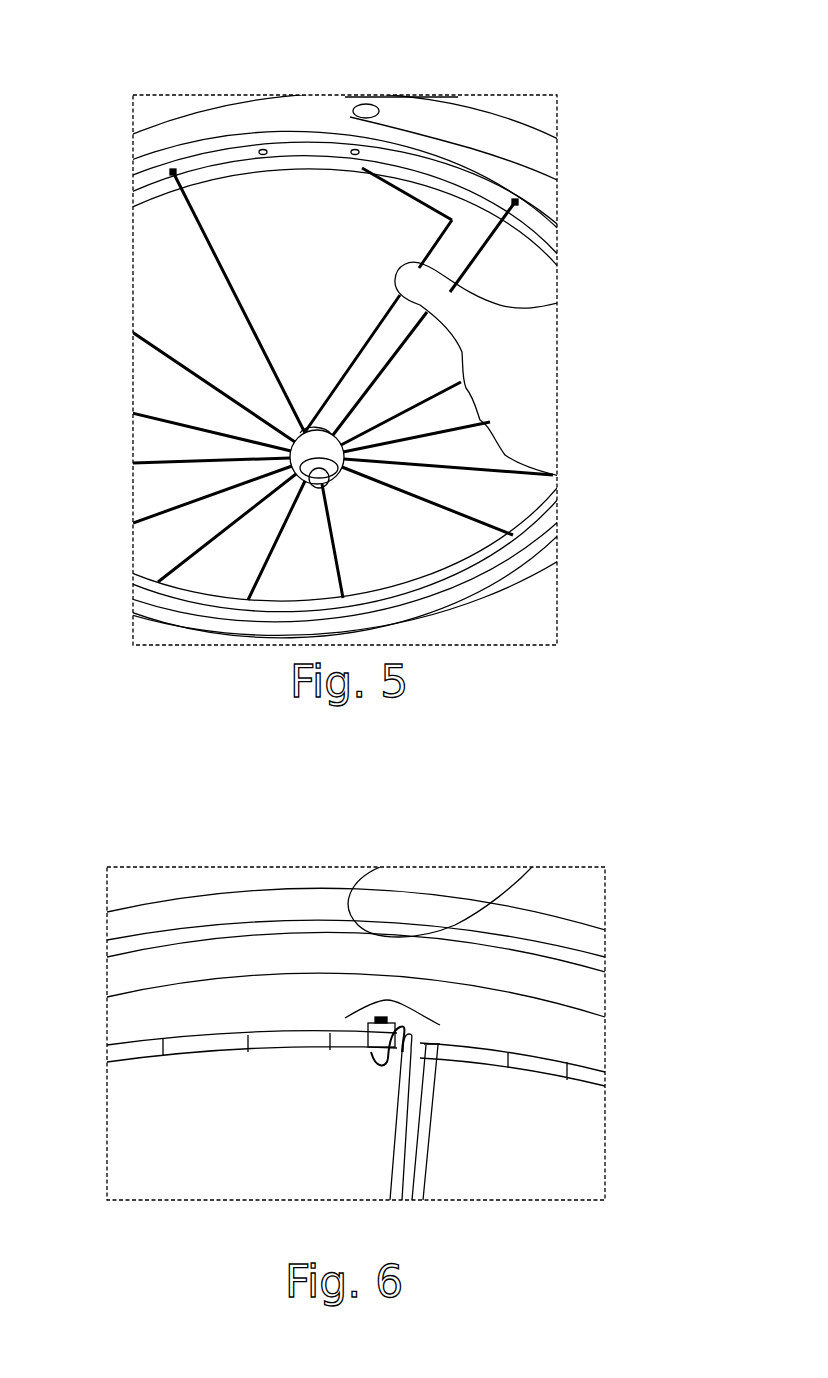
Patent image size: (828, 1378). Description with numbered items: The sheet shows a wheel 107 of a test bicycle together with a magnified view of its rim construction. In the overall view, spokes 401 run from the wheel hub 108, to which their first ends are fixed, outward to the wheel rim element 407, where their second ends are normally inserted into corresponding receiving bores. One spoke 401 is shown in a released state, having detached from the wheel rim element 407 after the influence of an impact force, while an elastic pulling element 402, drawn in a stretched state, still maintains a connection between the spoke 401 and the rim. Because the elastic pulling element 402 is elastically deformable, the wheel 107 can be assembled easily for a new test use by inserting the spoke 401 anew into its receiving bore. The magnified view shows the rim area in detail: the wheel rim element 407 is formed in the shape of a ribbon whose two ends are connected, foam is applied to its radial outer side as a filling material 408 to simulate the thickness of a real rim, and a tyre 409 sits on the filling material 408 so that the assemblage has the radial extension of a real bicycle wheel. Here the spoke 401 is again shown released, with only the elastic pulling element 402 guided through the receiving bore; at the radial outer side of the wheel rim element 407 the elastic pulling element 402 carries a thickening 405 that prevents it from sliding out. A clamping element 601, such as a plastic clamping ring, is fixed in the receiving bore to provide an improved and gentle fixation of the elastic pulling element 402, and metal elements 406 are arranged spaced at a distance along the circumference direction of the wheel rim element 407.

In FIG. 5, the wheel 107 is at (316, 66).
In FIG. 5, the wheel hub 108 is at (270, 457).
In FIG. 5, the spoke 401 is at (457, 235).
In FIG. 6, the spoke 401 is at (390, 1160).
In FIG. 5, the elastic pulling element 402 is at (457, 235).
In FIG. 6, the elastic pulling element 402 is at (377, 1067).
In FIG. 6, the thickening 405 is at (440, 1025).
In FIG. 6, the metal elements 406 is at (143, 1053).
In FIG. 5, the wheel rim element 407 is at (520, 203).
In FIG. 6, the wheel rim element 407 is at (540, 1060).
In FIG. 6, the filling material 408 is at (580, 1035).
In FIG. 6, the tyre 409 is at (590, 960).
In FIG. 6, the clamping element 601 is at (345, 1050).